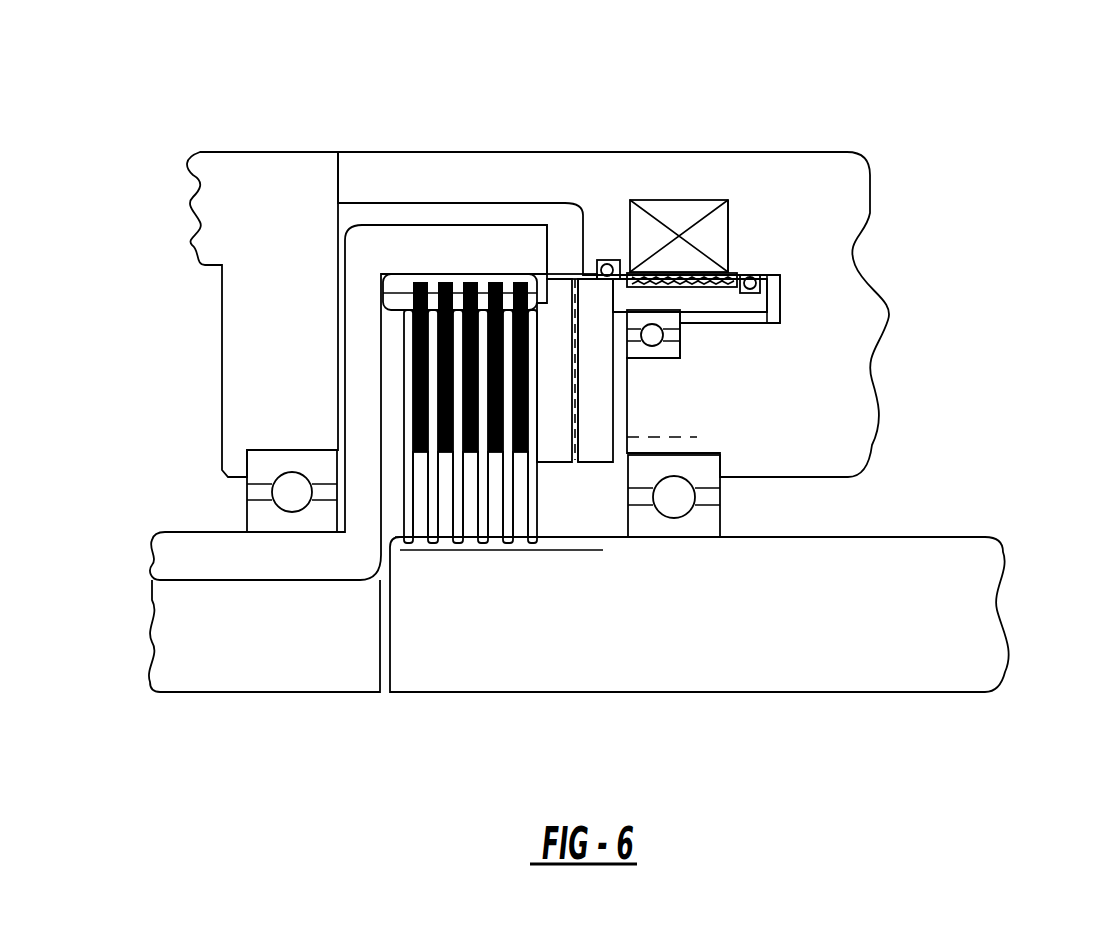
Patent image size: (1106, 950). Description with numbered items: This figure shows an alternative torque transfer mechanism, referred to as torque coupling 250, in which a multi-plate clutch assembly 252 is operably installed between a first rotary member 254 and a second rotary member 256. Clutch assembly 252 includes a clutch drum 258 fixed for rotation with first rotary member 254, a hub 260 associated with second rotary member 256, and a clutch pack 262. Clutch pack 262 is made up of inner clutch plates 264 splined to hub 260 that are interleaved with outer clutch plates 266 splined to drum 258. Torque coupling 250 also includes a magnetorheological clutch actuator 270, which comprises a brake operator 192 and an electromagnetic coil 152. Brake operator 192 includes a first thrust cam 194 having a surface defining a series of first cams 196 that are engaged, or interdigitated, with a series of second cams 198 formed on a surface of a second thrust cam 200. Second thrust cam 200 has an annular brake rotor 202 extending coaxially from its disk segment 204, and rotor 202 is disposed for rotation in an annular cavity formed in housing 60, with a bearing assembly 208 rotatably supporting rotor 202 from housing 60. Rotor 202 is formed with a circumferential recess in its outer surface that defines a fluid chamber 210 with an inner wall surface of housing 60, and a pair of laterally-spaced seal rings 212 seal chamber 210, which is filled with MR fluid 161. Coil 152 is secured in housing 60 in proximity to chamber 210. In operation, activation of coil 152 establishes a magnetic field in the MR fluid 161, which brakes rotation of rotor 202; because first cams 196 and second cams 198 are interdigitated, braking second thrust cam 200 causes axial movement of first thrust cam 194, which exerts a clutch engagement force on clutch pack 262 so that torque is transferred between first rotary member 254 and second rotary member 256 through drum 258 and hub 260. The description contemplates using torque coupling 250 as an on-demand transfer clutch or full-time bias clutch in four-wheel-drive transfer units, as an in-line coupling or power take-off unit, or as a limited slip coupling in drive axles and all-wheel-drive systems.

The housing 60 is at (886, 402).
The electromagnetic coil 152 is at (737, 267).
The MR fluid 161 is at (727, 285).
The brake operator 192 is at (606, 256).
The first thrust cam 194 is at (573, 266).
The first cams 196 is at (679, 432).
The second cams 198 is at (577, 463).
The second thrust cam 200 is at (787, 303).
The brake rotor 202 is at (703, 298).
The disk segment 204 is at (608, 374).
The bearing assembly 208 is at (660, 352).
The fluid chamber 210 is at (742, 220).
The seal rings 212 is at (690, 280).
The torque coupling 250 is at (765, 198).
The multi-plate clutch assembly 252 is at (411, 214).
The first rotary member 254 is at (211, 702).
The second rotary member 256 is at (978, 699).
The clutch drum 258 is at (468, 247).
The hub 260 is at (580, 543).
The clutch pack 262 is at (450, 512).
The inner clutch plates 264 is at (510, 503).
The outer clutch plates 266 is at (413, 297).
The magnetorheological clutch actuator 270 is at (669, 177).